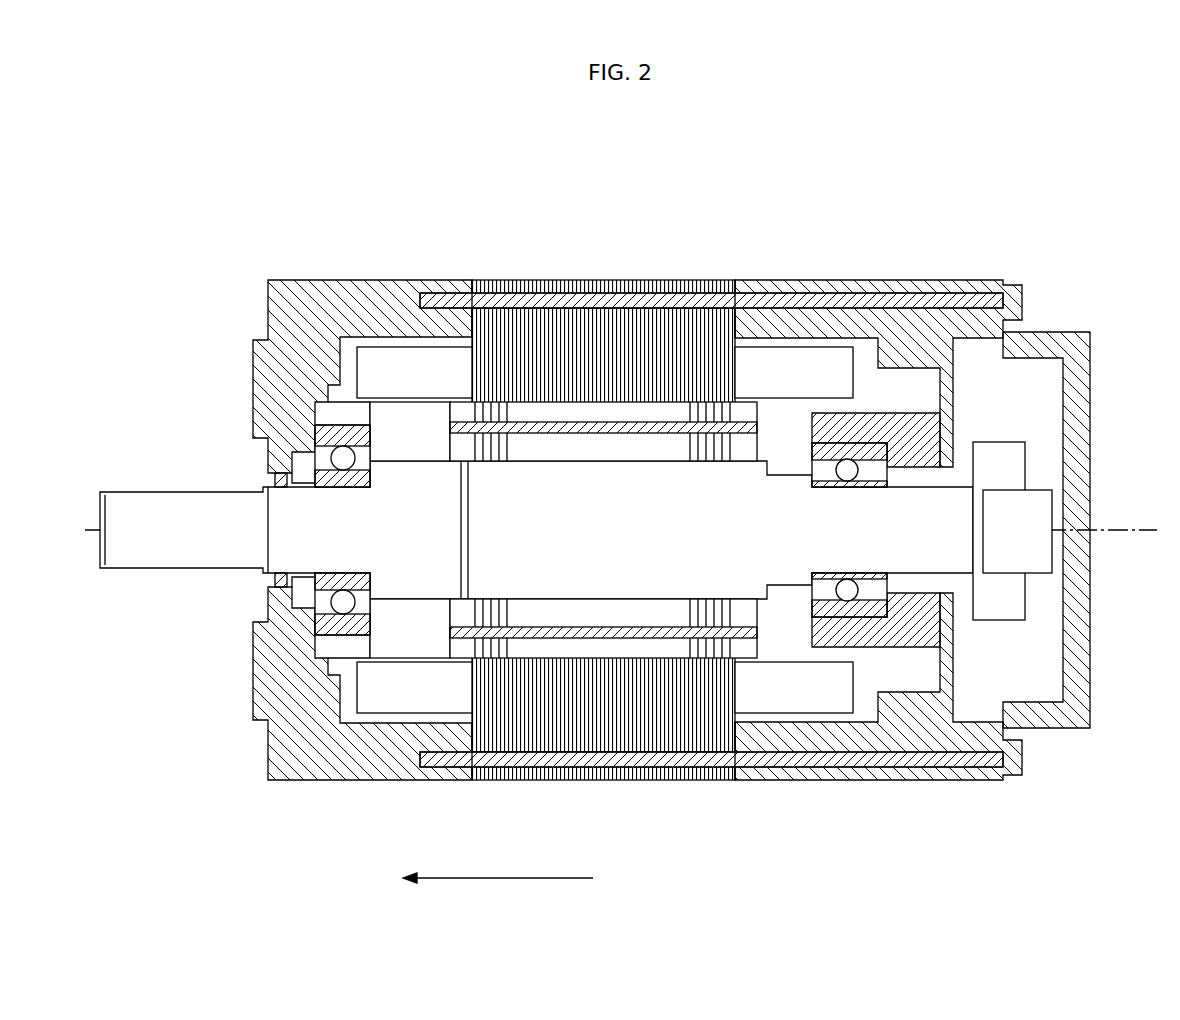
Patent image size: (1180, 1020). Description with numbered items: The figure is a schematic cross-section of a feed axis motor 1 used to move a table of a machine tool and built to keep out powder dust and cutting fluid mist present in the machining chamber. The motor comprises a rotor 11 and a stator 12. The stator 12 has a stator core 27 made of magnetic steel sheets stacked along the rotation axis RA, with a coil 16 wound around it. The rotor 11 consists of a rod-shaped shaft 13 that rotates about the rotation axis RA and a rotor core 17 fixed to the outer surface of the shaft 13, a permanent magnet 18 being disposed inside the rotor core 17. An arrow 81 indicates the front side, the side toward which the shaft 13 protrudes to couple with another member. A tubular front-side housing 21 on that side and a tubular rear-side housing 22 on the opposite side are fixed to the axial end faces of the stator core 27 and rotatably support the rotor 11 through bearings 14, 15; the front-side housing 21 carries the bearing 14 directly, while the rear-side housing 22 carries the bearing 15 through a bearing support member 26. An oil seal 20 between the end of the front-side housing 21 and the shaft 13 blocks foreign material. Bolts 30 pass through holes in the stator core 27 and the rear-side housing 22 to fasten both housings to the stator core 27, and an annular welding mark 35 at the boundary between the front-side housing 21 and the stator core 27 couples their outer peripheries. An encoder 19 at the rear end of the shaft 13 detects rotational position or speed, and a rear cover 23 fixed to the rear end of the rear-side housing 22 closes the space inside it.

The feed axis motor 1 is at (1099, 178).
The rotor 11 is at (637, 408).
The stator 12 is at (580, 276).
The shaft 13 is at (670, 575).
The bearing 14 is at (322, 630).
The bearing 15 is at (852, 618).
The coil 16 is at (403, 360).
The rotor core 17 is at (641, 640).
The magnet 18 is at (563, 637).
The encoder 19 is at (1010, 600).
The oil seal 20 is at (275, 480).
The front-side housing 21 is at (360, 300).
The rear-side housing 22 is at (840, 299).
The rear cover 23 is at (1038, 333).
The bearing support member 26 is at (927, 640).
The stator core 27 is at (605, 748).
The bolt 30 is at (927, 289).
The welding mark 35 is at (470, 285).
The arrow 81 is at (478, 882).
The rotation axis RA is at (1142, 525).